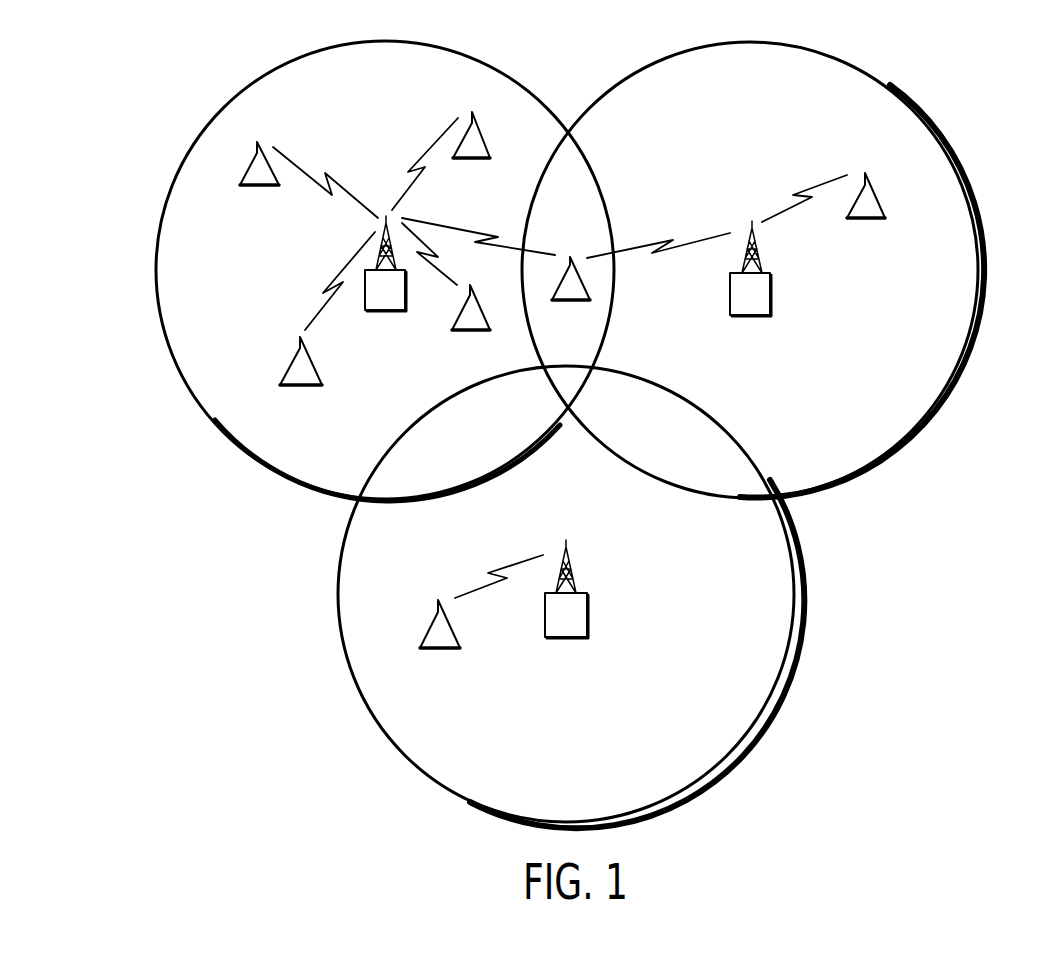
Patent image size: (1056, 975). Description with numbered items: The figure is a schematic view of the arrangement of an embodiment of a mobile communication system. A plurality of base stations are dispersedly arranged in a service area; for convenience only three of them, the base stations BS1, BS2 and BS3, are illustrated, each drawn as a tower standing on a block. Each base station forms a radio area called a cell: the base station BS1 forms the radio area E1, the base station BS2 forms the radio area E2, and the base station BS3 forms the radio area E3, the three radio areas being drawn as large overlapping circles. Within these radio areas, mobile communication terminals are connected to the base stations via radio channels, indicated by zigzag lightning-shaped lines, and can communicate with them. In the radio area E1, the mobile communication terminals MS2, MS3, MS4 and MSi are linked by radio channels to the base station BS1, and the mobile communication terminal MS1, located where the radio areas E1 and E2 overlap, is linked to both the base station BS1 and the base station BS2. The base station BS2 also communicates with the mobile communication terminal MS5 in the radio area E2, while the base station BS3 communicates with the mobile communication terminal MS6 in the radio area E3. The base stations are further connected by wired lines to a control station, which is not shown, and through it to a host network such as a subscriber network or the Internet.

The radio area E1 is at (156, 262).
The radio area E2 is at (980, 266).
The radio area E3 is at (796, 603).
The base station BS1 is at (385, 280).
The base station BS2 is at (750, 284).
The base station BS3 is at (566, 605).
The mobile communication terminal MS1 is at (568, 296).
The mobile communication terminal MS2 is at (258, 181).
The mobile communication terminal MS3 is at (300, 377).
The mobile communication terminal MS4 is at (471, 151).
The mobile communication terminal MS5 is at (865, 212).
The mobile communication terminal MS6 is at (439, 641).
The mobile communication terminal MSi is at (471, 324).